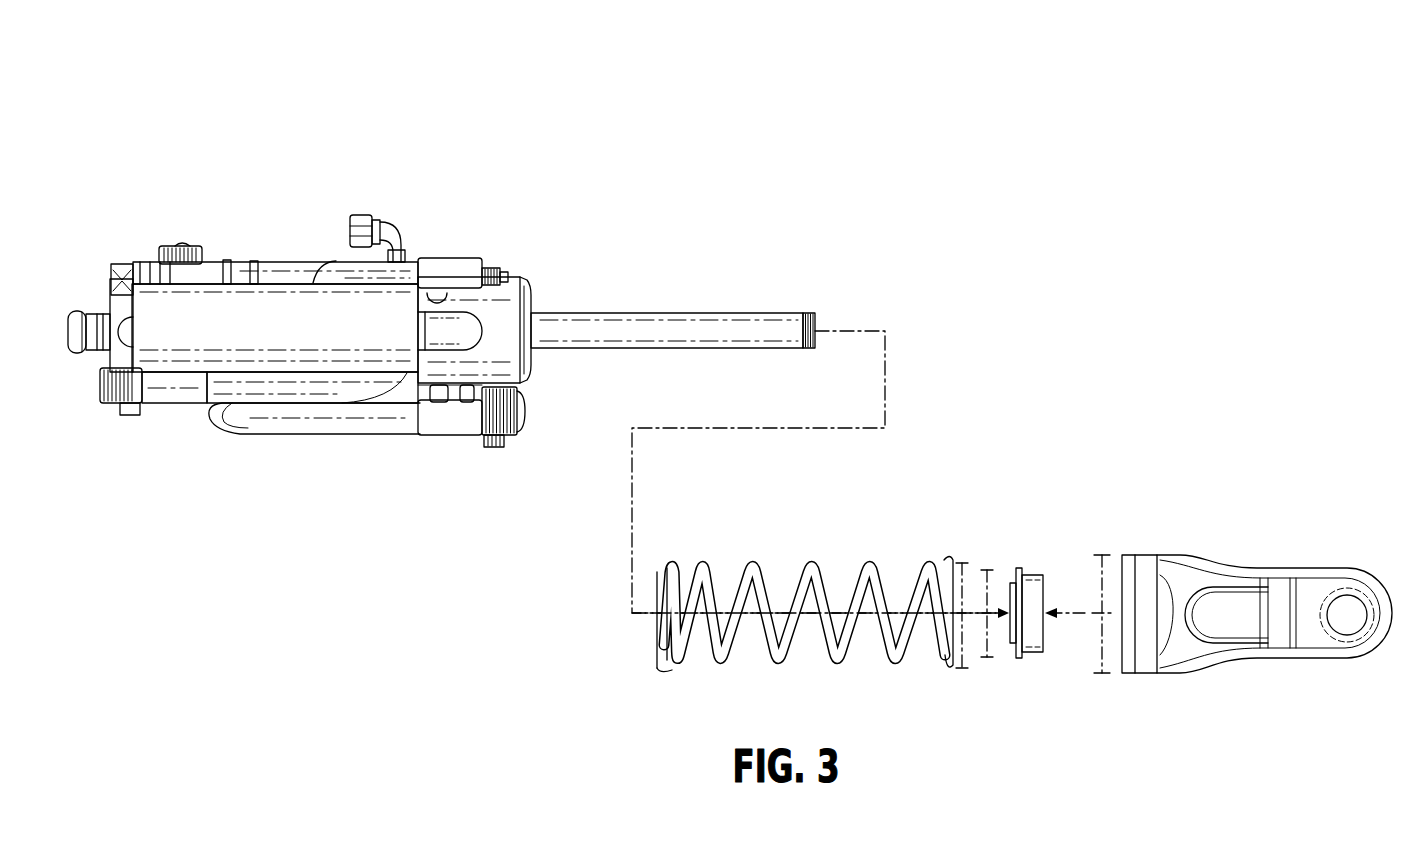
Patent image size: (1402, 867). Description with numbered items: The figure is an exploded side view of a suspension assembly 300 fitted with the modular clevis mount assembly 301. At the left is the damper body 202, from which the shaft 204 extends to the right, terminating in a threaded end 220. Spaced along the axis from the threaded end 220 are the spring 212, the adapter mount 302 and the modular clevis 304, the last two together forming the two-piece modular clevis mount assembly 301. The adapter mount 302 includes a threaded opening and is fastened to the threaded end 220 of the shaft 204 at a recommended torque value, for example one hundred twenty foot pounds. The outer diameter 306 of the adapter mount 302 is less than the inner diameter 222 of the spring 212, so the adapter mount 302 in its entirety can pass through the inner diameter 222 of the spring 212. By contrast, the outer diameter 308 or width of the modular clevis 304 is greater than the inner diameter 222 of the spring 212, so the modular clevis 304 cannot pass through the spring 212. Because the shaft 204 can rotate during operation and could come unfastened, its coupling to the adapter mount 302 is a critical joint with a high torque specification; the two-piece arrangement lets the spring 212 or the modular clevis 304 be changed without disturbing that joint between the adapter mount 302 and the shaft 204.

The suspension assembly 300 is at (688, 118).
The damper body 202 is at (252, 264).
The shaft 204 is at (639, 325).
The threaded end 220 is at (805, 312).
The spring 212 is at (812, 560).
The inner diameter 222 is at (962, 562).
The outer diameter 306 is at (987, 570).
The adapter mount 302 is at (1031, 580).
The outer diameter 308 is at (1102, 556).
The modular clevis 304 is at (1243, 600).
The modular clevis mount assembly 301 is at (1083, 676).